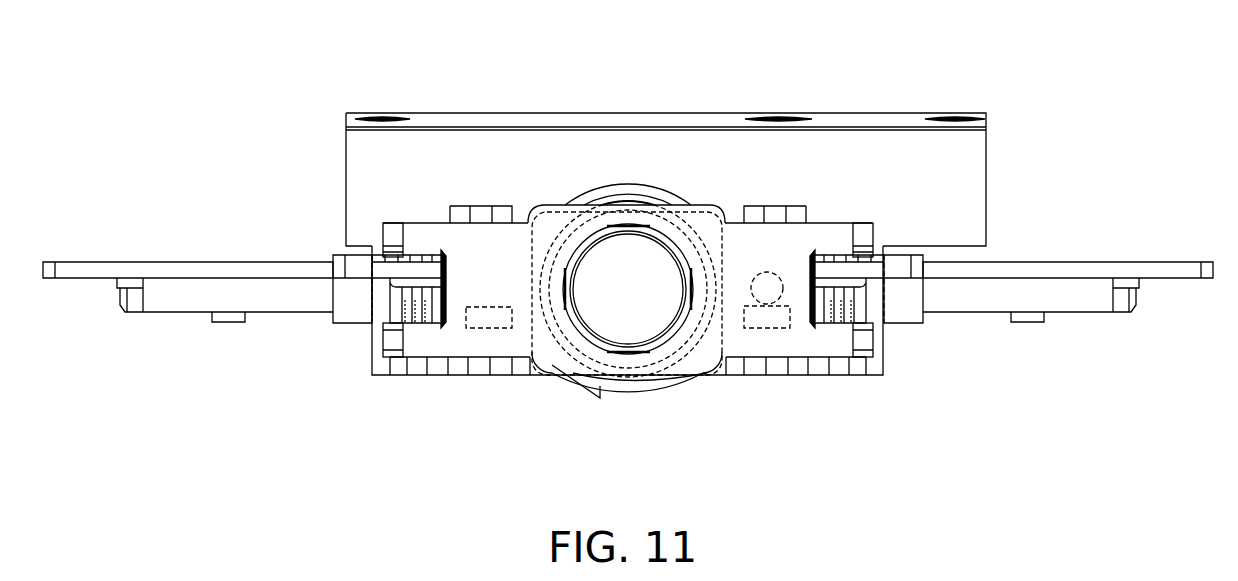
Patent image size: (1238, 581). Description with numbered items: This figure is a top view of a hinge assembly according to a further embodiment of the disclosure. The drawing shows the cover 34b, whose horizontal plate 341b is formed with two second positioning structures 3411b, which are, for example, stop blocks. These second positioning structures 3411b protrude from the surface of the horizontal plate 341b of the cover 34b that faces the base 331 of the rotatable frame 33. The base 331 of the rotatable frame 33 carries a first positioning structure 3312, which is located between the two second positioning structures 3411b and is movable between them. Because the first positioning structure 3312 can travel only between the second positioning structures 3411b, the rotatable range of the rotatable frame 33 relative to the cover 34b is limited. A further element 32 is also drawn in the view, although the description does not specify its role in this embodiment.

The cover 34b is at (724, 251).
The horizontal plate 341b is at (960, 170).
The first positioning structure 3312 is at (770, 274).
The second positioning structures 3411b is at (629, 364).
The lens 32 is at (596, 343).
The base 331 is at (706, 373).
The rotatable frame 33 is at (1062, 332).